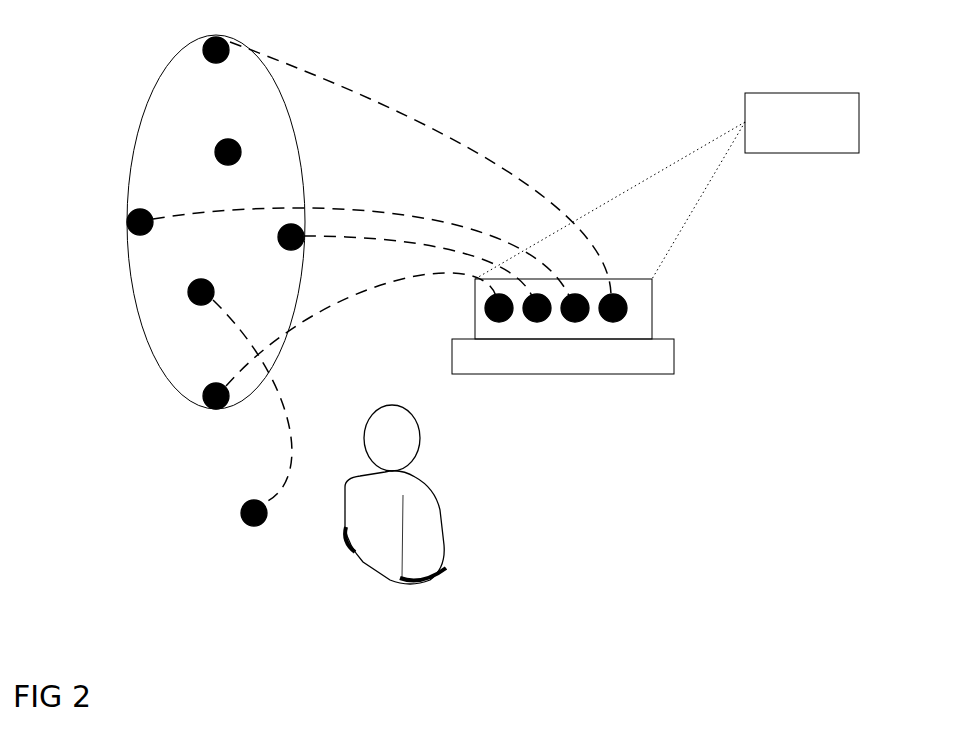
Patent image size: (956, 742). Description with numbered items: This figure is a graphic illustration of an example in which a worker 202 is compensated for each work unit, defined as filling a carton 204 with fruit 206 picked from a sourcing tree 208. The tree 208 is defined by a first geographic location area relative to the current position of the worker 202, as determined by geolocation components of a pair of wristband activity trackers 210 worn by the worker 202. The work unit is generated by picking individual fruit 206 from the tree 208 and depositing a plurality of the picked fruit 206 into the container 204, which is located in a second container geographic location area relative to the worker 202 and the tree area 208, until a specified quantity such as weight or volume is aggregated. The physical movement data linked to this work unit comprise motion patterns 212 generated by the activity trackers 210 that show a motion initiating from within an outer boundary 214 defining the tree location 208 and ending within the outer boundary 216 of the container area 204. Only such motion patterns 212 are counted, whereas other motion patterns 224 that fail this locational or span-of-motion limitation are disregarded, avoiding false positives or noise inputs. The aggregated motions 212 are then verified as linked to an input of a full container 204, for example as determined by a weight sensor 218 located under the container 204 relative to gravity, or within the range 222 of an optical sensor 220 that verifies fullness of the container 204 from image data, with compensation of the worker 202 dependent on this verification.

The worker 202 is at (389, 523).
The carton 204 is at (607, 318).
The fruit 206 is at (222, 148).
The sourcing tree 208 is at (165, 233).
The wristband activity trackers 210 is at (355, 550).
The motion patterns 212 is at (503, 170).
The outer boundary 214 is at (160, 370).
The outer boundary 216 is at (652, 308).
The weight sensor 218 is at (652, 354).
The optical sensor 220 is at (830, 128).
The range 222 is at (708, 185).
The other motion patterns 224 is at (290, 413).